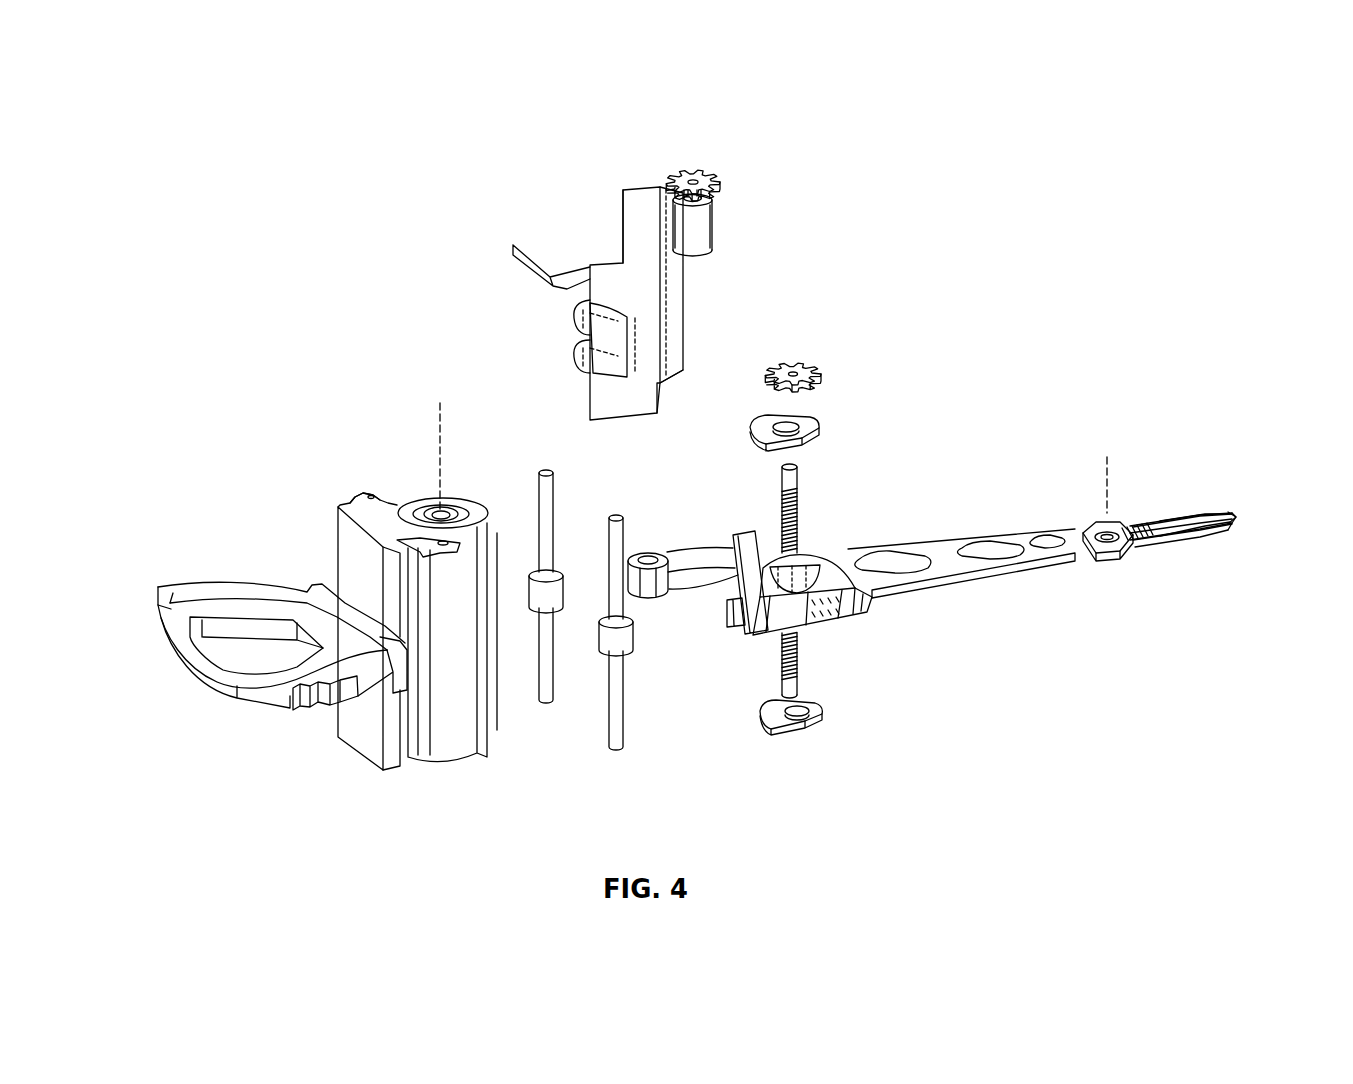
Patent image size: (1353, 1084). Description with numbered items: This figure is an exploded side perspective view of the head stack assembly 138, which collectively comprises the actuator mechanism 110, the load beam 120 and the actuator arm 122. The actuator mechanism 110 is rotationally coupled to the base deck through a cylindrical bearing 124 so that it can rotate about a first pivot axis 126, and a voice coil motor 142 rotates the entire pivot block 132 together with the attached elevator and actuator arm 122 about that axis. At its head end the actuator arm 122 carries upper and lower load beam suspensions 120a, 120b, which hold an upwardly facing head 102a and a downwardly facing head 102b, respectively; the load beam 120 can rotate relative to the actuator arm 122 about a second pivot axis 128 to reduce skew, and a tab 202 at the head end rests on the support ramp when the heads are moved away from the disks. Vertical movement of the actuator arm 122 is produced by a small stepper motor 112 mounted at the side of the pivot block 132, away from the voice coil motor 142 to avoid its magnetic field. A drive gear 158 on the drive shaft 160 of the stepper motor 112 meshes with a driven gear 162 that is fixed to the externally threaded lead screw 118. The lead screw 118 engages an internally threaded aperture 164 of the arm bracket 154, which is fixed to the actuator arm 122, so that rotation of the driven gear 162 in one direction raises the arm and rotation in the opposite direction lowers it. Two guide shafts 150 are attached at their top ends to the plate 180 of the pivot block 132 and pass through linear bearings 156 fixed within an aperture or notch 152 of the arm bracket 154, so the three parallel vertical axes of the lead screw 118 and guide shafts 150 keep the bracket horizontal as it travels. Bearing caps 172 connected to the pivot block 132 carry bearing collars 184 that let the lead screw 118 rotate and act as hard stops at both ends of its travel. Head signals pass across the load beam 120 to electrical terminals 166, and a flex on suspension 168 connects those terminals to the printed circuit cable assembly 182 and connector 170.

The actuator mechanism 110 is at (286, 710).
The stepper motor 112 is at (704, 238).
The lead screw 118 is at (800, 657).
The load beam 120 is at (1163, 548).
The upper load beam suspension 120a is at (1160, 514).
The lower load beam suspension 120b is at (1187, 541).
The actuator arm 122 is at (947, 547).
The bearing 124 is at (413, 504).
The axis 126 is at (443, 447).
The second pivot axis 128 is at (1103, 510).
The pivot block 132 is at (358, 556).
The head stack assembly 138 is at (1078, 442).
The voice coil motor 142 is at (187, 667).
The guide shaft 150 is at (550, 680).
The aperture or notch 152 is at (650, 557).
The arm bracket 154 is at (708, 550).
The linear bearing 156 is at (556, 578).
The drive gear 158 is at (696, 168).
The drive shaft 160 is at (706, 203).
The driven gear 162 is at (814, 368).
The internally threaded aperture 164 is at (784, 571).
The electrical terminals 166 is at (853, 617).
The flex on suspension 168 is at (760, 553).
The connector 170 is at (610, 367).
The bearing cap 172 is at (760, 418).
The plate 180 is at (366, 500).
The printed circuit cable assembly 182 is at (614, 284).
The bearing collar 184 is at (797, 422).
The tab 202 is at (1233, 513).
The upwardly facing head 102a is at (1211, 517).
The downwardly facing head 102b is at (1207, 538).